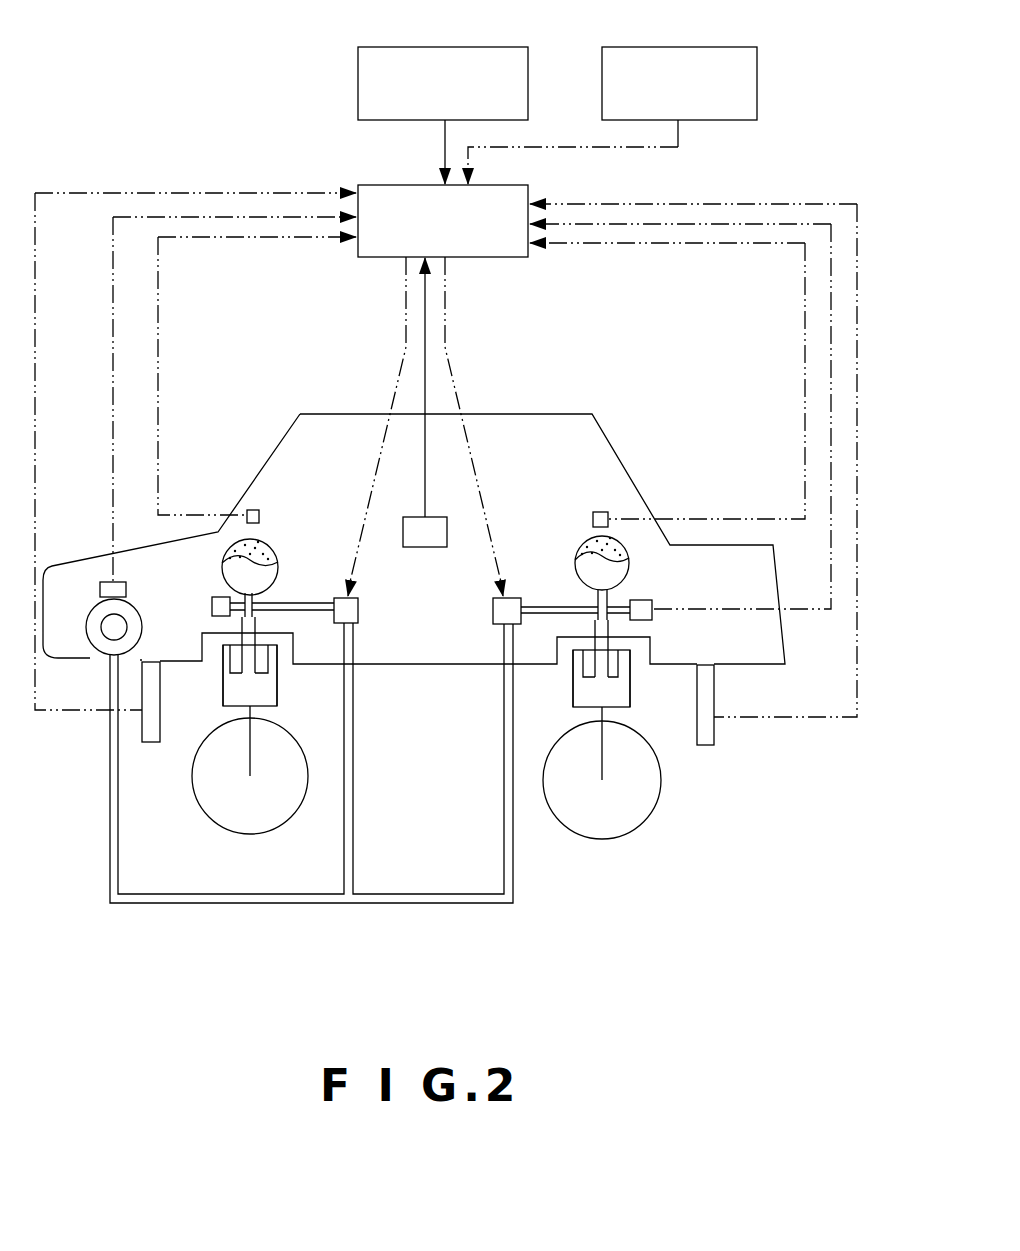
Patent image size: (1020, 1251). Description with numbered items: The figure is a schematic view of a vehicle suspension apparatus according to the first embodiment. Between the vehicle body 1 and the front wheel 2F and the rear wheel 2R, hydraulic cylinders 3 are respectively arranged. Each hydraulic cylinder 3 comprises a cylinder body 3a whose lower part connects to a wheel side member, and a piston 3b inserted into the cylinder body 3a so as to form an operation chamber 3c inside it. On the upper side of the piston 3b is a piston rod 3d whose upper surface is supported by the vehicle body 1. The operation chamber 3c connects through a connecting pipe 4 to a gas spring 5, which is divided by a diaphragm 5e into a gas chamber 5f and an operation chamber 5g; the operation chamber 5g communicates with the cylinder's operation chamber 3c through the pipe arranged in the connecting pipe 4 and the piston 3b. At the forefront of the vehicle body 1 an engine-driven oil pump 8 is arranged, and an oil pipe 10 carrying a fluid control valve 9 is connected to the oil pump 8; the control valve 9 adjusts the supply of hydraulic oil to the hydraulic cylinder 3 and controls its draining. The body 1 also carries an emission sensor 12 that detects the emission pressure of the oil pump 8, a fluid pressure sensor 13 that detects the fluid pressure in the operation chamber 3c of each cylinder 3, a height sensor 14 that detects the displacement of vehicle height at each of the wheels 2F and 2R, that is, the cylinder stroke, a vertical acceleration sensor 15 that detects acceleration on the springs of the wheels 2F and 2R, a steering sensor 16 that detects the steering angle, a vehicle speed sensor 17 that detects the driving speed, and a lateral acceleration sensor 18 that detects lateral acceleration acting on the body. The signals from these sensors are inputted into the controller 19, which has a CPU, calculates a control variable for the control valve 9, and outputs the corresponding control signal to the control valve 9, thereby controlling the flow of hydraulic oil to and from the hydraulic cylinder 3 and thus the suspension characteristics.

The vehicle body 1 is at (541, 404).
The front wheel 2F is at (280, 826).
The rear wheel 2R is at (645, 822).
The hydraulic cylinder 3 is at (291, 714).
The cylinder body 3a is at (278, 667).
The piston 3b is at (226, 682).
The operation chamber 3c is at (238, 701).
The piston rod 3d is at (202, 633).
The connecting pipe 4 is at (258, 600).
The gas spring 5 is at (286, 546).
The diaphragm 5e is at (222, 567).
The gas chamber 5f is at (263, 540).
The operation chamber 5g is at (240, 578).
The oil pump 8 is at (92, 655).
The fluid control valve 9 is at (360, 611).
The oil pipe 10 is at (266, 905).
The emission sensor 12 is at (100, 584).
The fluid pressure sensor 13 is at (212, 607).
The height sensor 14 is at (150, 742).
The vertical acceleration sensor 15 is at (258, 510).
The steering sensor 16 is at (483, 47).
The vehicle speed sensor 17 is at (706, 47).
The lateral acceleration sensor 18 is at (426, 548).
The controller 19 is at (375, 185).